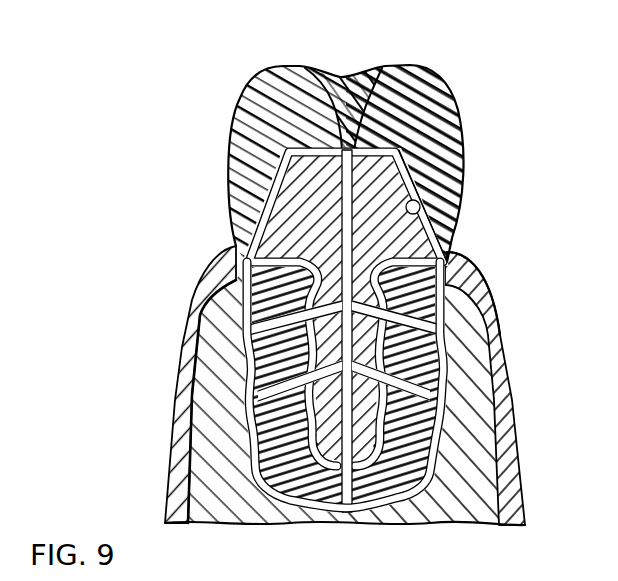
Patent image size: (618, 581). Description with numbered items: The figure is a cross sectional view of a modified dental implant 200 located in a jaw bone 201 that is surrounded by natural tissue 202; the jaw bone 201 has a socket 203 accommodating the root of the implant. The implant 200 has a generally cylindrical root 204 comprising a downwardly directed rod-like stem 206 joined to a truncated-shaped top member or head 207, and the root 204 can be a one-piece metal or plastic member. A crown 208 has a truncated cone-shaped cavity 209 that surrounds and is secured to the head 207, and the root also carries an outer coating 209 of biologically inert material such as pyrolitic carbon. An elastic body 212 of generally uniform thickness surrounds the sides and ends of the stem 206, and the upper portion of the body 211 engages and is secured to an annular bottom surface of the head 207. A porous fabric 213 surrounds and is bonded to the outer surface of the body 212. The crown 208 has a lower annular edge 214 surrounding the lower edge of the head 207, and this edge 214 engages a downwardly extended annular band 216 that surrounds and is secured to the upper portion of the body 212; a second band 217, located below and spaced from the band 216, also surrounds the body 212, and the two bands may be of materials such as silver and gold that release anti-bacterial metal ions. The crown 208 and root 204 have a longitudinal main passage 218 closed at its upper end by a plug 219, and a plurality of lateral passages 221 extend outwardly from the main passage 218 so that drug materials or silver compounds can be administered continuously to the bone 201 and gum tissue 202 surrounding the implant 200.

The dental implant 200 is at (233, 86).
The jaw bone 201 is at (480, 477).
The natural tissue 202 is at (510, 400).
The socket 203 is at (432, 527).
The root 204 is at (310, 218).
The stem 206 is at (441, 357).
The head 207 is at (412, 172).
The crown 208 is at (440, 95).
The cavity 209 is at (258, 176).
The body 211 is at (428, 216).
The elastic body 212 is at (288, 443).
The porous fabric 213 is at (255, 440).
The lower annular edge 214 is at (246, 264).
The annular band 216 is at (480, 267).
The second band 217 is at (441, 318).
The main passage 218 is at (346, 180).
The plug 219 is at (352, 80).
The lateral passages 221 is at (262, 335).